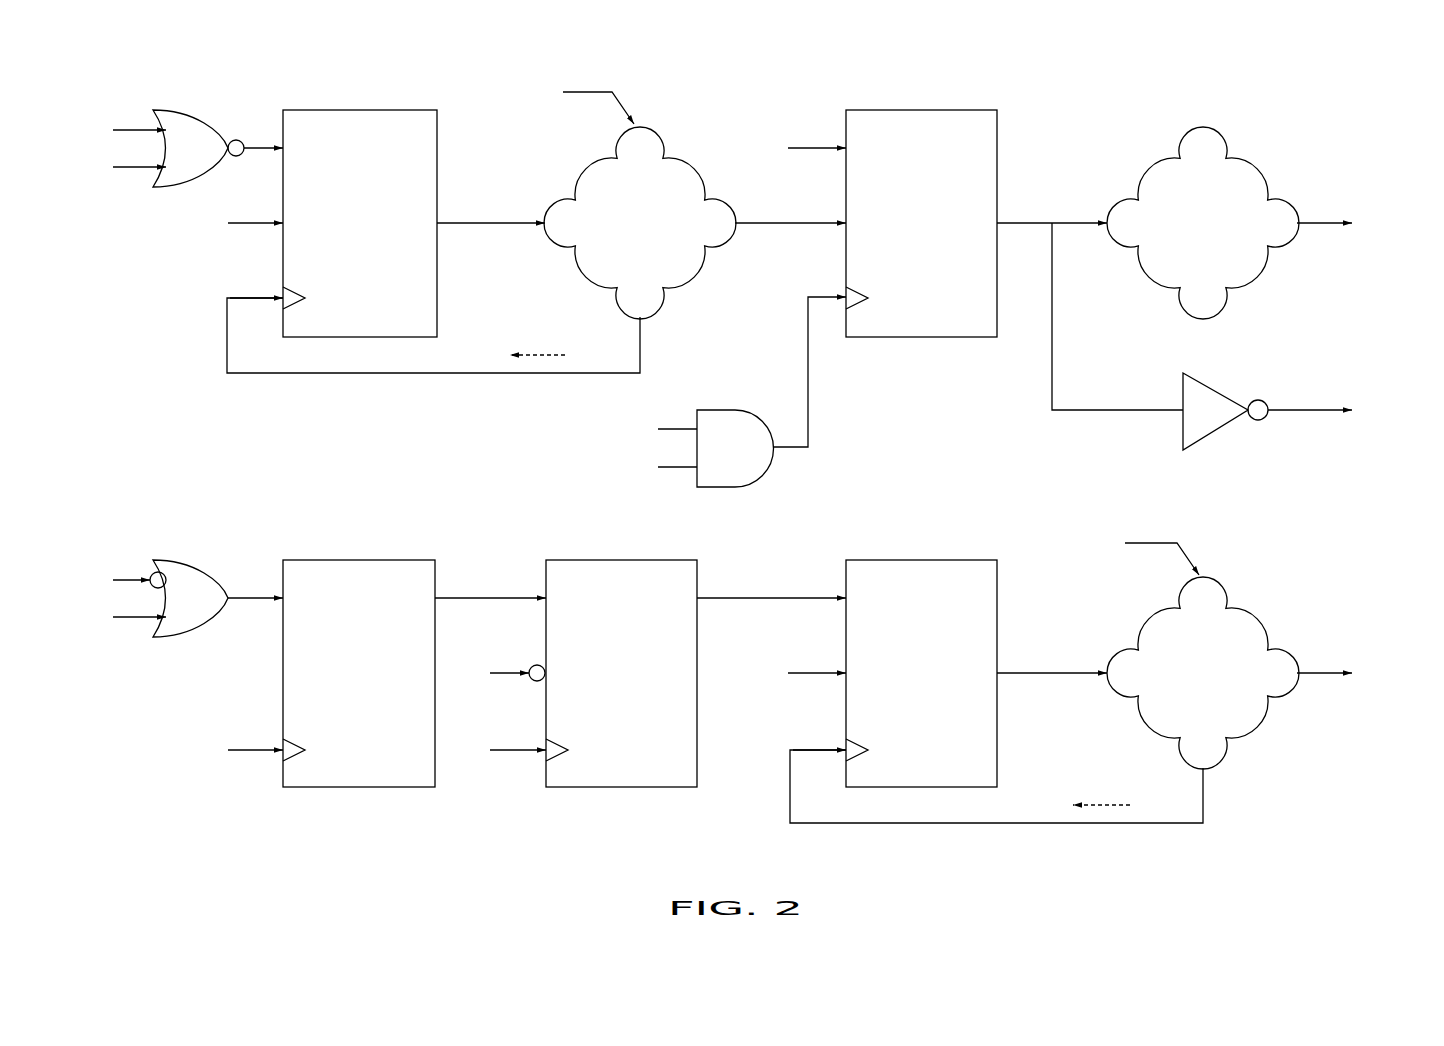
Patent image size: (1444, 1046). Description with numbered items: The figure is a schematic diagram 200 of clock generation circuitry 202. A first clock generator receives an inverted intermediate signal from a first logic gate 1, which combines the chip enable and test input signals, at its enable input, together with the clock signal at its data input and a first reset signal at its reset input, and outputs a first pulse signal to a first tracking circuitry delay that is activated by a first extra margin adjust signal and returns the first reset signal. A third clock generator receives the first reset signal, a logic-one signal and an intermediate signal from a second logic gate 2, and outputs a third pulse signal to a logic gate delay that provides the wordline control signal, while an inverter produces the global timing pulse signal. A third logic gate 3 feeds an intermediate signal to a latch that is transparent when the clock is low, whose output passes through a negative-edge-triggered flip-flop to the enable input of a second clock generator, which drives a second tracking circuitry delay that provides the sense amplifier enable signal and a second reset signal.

The schematic diagram 200 is at (152, 26).
The clock generation circuitry 202 is at (937, 27).
The logic gate L1 1 is at (198, 148).
The logic gate L2 2 is at (735, 448).
The logic gate L3 3 is at (189, 598).